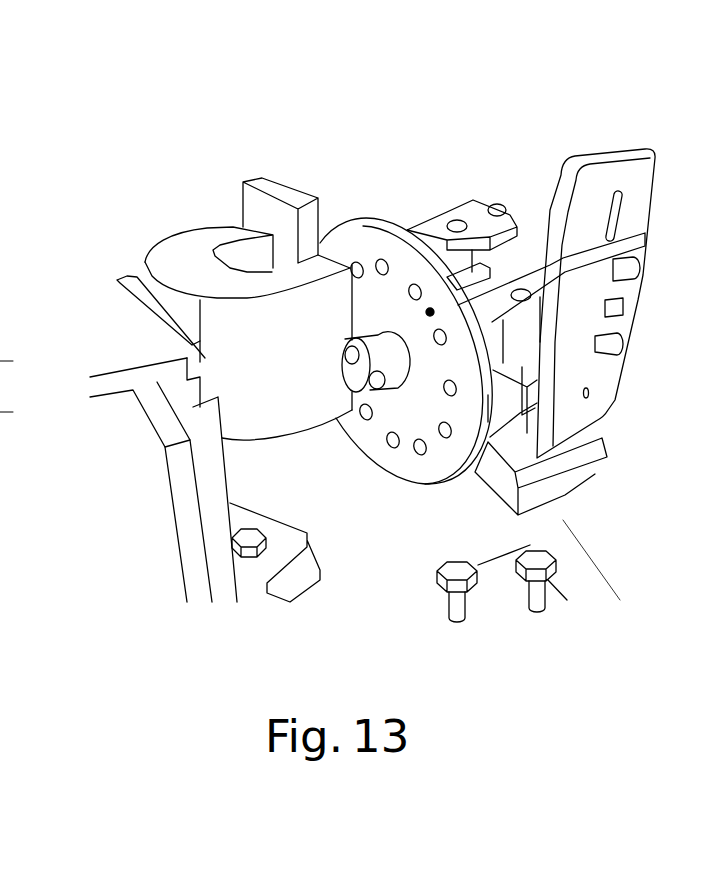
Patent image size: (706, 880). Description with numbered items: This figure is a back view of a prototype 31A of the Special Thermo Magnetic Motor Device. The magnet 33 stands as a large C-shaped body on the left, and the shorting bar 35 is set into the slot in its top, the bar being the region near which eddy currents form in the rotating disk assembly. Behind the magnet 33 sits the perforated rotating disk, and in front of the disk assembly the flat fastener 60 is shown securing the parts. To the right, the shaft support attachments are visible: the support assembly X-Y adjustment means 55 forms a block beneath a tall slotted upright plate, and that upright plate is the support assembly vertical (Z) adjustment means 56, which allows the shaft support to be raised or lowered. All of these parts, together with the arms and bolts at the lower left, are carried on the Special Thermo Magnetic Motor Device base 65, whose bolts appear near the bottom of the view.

The magnet 33 is at (165, 258).
The shorting bar 35 is at (273, 205).
The flat fastener 60 is at (413, 412).
The support assembly vertical (Z) adjustment means 56 is at (590, 338).
The support assembly X-Y adjustment means 55 is at (548, 474).
The Special Thermo Magnetic Motor Device base 65 is at (437, 518).
The prototype of a Special Thermo Magnetic Motor Device 31A is at (507, 693).